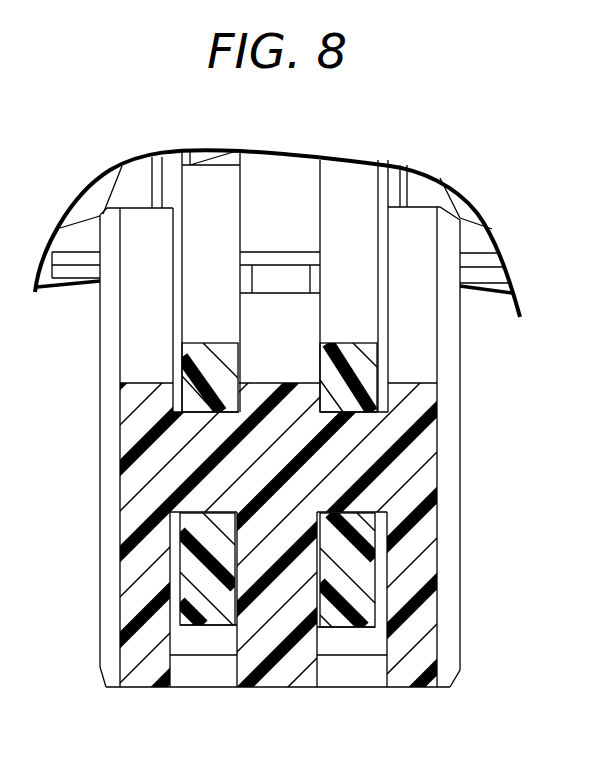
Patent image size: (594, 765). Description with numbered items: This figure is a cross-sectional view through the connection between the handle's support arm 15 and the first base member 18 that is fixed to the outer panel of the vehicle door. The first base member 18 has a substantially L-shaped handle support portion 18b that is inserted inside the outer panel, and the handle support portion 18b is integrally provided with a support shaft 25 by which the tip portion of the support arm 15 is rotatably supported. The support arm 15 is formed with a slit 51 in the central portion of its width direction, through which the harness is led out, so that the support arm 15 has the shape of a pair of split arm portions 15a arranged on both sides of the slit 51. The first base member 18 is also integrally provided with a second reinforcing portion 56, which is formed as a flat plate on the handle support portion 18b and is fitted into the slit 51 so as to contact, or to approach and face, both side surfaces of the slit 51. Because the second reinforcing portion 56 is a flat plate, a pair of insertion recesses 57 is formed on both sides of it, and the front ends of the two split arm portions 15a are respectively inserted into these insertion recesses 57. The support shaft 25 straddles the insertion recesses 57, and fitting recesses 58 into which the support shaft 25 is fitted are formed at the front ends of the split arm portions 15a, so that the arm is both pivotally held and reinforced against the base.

The support arm 15 is at (209, 645).
The split arm portions 15a is at (187, 578).
The first base member 18 is at (446, 519).
The handle support portion 18b is at (438, 638).
The support shaft 25 is at (360, 420).
The slit 51 is at (318, 305).
The second reinforcing portion 56 is at (257, 395).
The insertion recesses 57 is at (178, 653).
The fitting recesses 58 is at (347, 507).